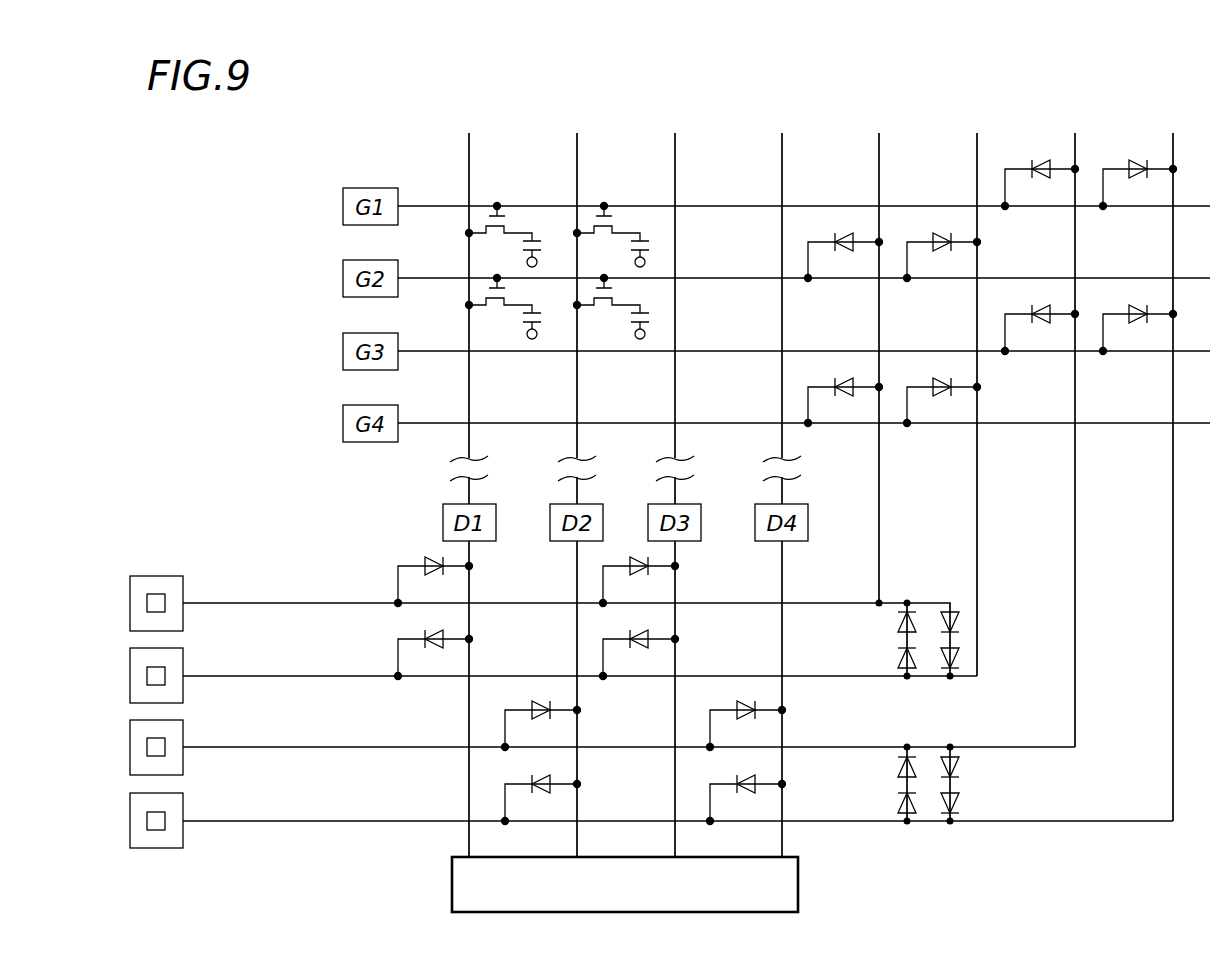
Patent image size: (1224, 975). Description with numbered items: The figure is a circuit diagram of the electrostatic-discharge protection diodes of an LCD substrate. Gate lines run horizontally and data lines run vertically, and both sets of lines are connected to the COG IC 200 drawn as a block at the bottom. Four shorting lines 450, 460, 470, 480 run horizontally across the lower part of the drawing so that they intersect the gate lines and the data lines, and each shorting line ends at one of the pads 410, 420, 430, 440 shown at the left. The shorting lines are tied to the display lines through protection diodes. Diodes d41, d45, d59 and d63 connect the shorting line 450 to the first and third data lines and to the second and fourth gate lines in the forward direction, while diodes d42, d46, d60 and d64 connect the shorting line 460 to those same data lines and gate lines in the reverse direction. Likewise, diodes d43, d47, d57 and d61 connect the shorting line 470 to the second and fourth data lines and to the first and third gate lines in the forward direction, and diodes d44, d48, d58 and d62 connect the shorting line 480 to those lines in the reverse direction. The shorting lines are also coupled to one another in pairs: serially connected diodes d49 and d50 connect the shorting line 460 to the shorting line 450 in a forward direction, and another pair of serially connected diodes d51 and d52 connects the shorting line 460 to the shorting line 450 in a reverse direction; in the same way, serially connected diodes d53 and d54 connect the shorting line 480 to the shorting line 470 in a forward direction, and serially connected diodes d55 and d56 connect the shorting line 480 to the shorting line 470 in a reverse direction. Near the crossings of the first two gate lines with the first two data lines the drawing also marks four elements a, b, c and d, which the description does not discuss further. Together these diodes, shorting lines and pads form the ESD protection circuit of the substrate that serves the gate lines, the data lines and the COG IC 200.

The COG IC 200 is at (452, 883).
The pad 410 is at (130, 600).
The pad 420 is at (130, 673).
The pad 430 is at (130, 744).
The pad 440 is at (130, 818).
The shorting line 450 is at (312, 603).
The shorting line 460 is at (312, 676).
The shorting line 470 is at (312, 747).
The shorting line 480 is at (312, 821).
The thin film transistor a is at (513, 235).
The thin film transistor b is at (513, 307).
The thin film transistor c is at (620, 235).
The thin film transistor d is at (621, 307).
The diode d41 is at (434, 582).
The diode d42 is at (434, 655).
The diode d43 is at (541, 726).
The diode d44 is at (541, 800).
The diode d45 is at (639, 582).
The diode d46 is at (639, 655).
The diode d47 is at (746, 726).
The diode d48 is at (746, 800).
The diode d49 is at (884, 624).
The diode d50 is at (884, 660).
The diode d51 is at (973, 624).
The diode d52 is at (973, 660).
The diode d53 is at (884, 770).
The diode d54 is at (884, 805).
The diode d55 is at (973, 770).
The diode d56 is at (973, 805).
The diode d57 is at (1040, 185).
The diode d58 is at (1138, 185).
The diode d59 is at (844, 257).
The diode d60 is at (942, 257).
The diode d61 is at (1040, 330).
The diode d62 is at (1138, 330).
The diode d63 is at (844, 402).
The diode d64 is at (942, 402).